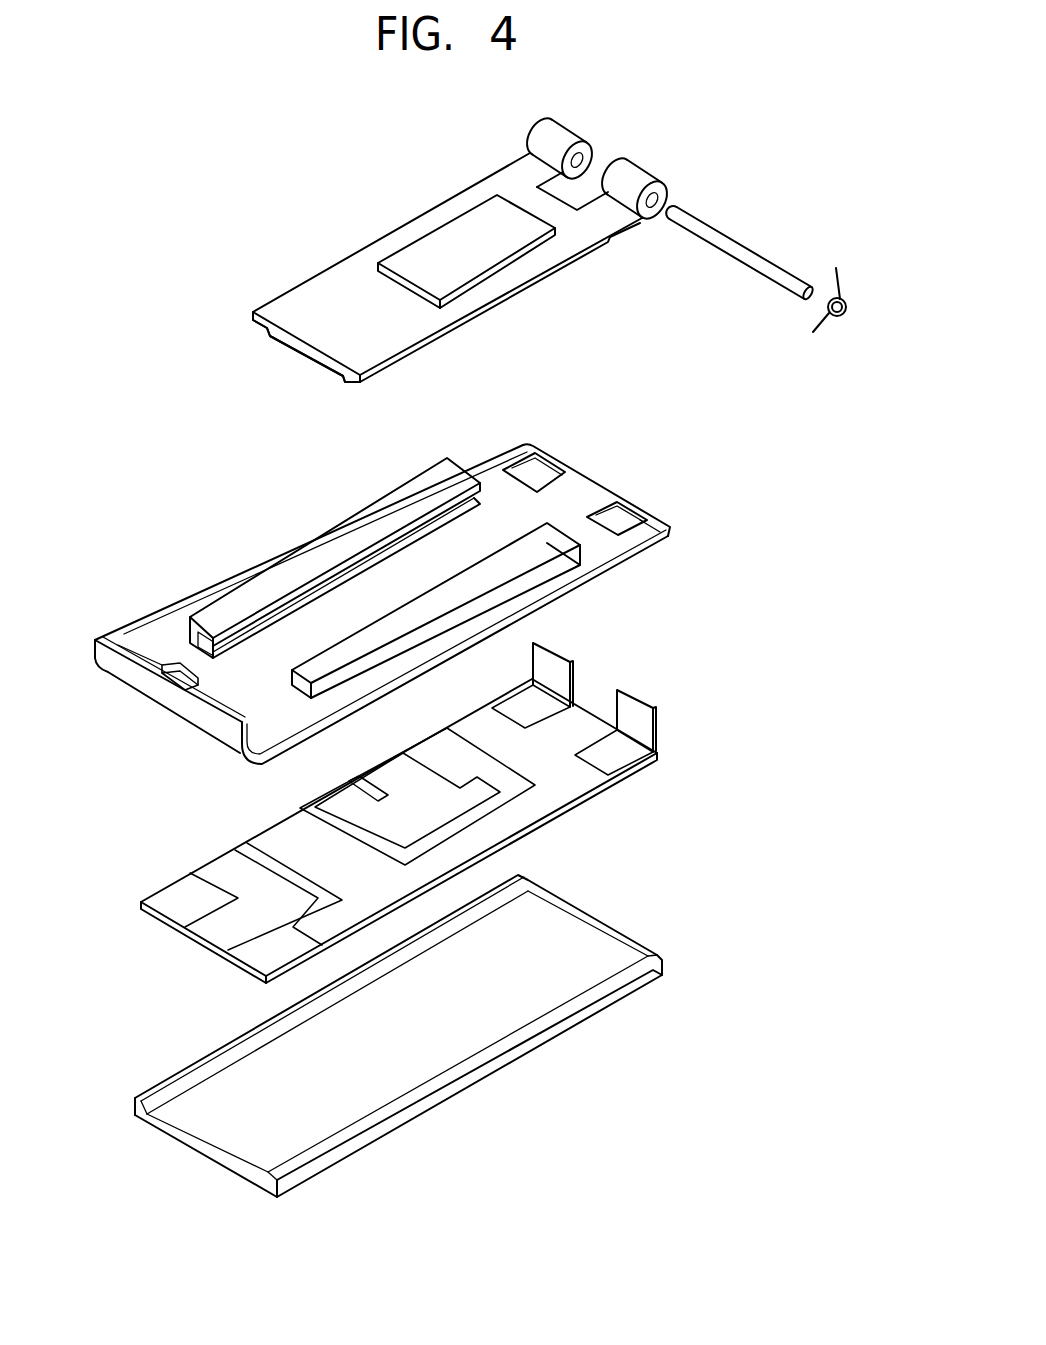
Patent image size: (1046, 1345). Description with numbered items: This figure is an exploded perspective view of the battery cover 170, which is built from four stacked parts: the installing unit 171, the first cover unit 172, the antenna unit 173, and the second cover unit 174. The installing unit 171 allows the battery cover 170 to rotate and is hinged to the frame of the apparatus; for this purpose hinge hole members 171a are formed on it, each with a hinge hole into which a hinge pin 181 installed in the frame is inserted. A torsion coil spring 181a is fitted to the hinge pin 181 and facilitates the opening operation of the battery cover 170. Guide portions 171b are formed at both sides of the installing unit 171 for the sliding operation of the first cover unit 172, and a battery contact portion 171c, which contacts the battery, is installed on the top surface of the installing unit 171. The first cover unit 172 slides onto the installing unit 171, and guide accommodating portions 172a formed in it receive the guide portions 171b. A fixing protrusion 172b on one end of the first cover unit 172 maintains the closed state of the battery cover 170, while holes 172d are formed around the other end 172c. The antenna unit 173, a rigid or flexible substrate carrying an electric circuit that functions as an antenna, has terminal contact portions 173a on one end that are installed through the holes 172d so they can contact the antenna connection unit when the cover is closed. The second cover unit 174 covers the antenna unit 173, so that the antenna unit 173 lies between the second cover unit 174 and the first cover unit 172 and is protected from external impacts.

The battery cover 170 is at (210, 165).
The installing unit 171 is at (225, 332).
The hinge hole members 171a is at (632, 177).
The guide portions 171b is at (345, 374).
The battery contact portion 171c is at (447, 243).
The first cover unit 172 is at (148, 731).
The guide accommodating portions 172a is at (425, 612).
The fixing protrusion 172b is at (180, 685).
The another end 172c is at (585, 490).
The holes 172d is at (617, 518).
The antenna unit 173 is at (148, 950).
The terminal contact portions 173a is at (633, 697).
The second cover unit 174 is at (148, 1154).
The hinge pin 181 is at (747, 250).
The torsion coil spring 181a is at (837, 297).